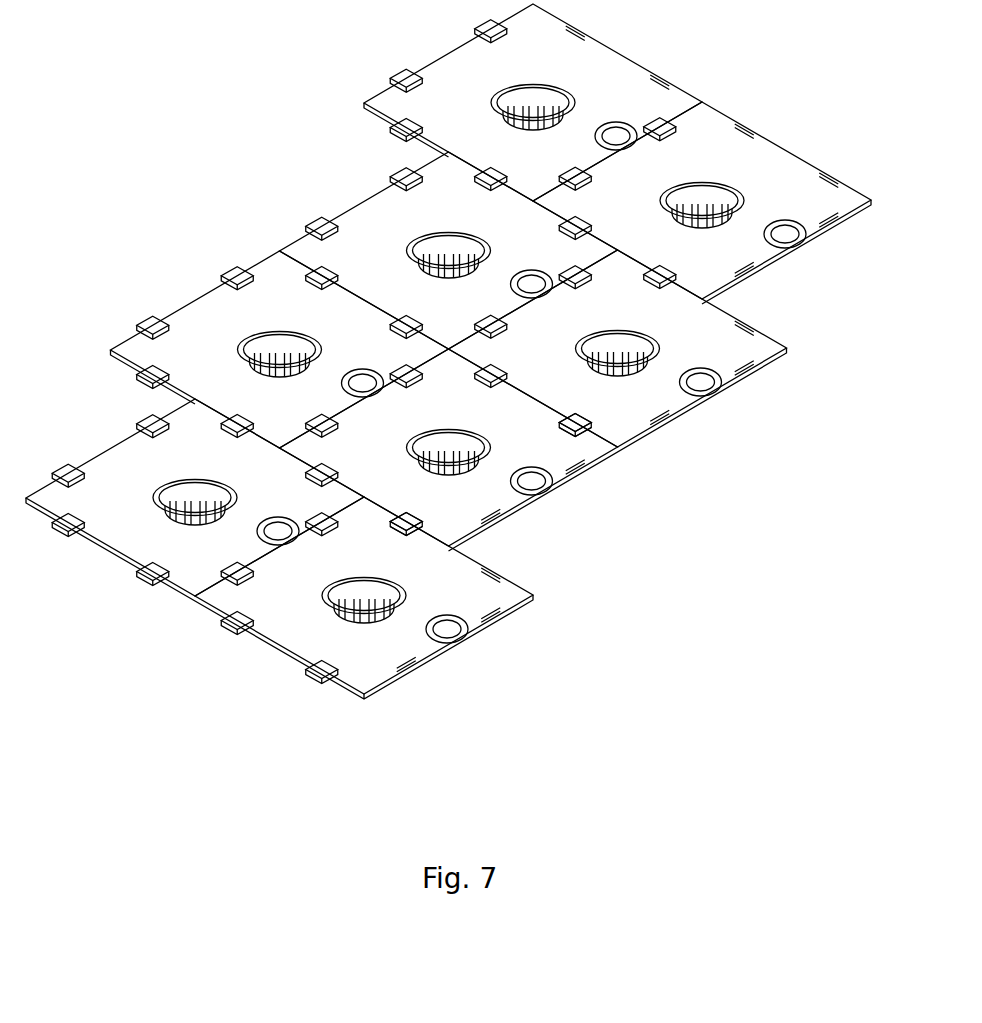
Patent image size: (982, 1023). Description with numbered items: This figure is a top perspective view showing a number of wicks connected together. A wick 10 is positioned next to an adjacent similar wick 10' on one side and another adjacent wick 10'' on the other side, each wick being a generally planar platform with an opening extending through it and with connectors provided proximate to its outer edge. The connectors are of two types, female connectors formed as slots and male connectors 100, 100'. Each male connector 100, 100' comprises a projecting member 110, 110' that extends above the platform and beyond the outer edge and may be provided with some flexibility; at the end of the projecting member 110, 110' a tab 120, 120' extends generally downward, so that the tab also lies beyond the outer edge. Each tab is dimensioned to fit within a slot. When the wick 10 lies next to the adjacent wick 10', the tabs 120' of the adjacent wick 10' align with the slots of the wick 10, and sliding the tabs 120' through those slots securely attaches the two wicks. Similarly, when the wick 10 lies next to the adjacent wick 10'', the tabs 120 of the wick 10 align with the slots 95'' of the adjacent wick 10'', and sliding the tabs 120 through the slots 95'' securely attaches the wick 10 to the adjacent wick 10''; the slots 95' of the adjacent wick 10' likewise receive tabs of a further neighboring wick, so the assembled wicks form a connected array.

The wick 10 is at (475, 447).
The adjacent similar wick 10' is at (618, 358).
The adjacent wick 10'' is at (412, 595).
The slot 95' is at (531, 420).
The slot 95'' is at (373, 523).
The male connector 100 is at (443, 520).
The male connector 100' is at (615, 421).
The projecting member 110 is at (401, 506).
The projecting member 110' is at (571, 401).
The tab 120 is at (399, 547).
The tab 120' is at (548, 441).